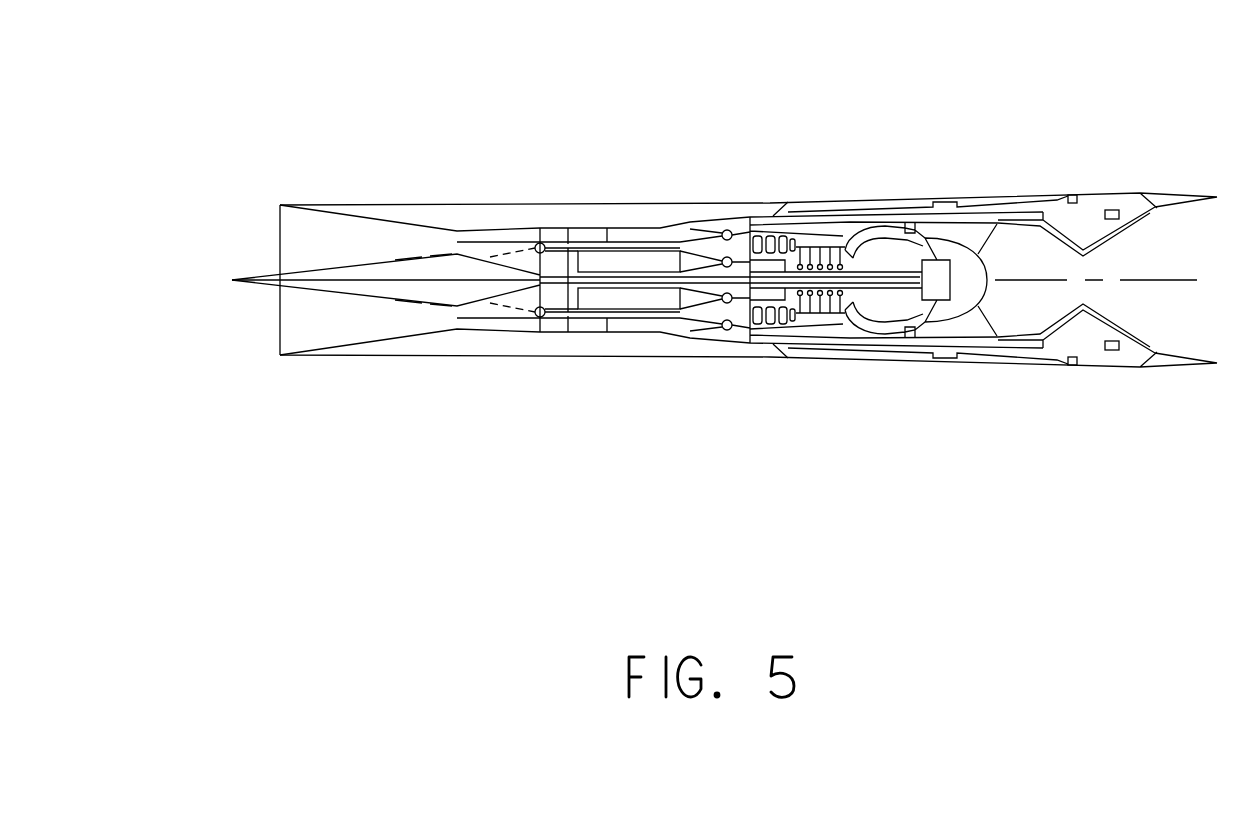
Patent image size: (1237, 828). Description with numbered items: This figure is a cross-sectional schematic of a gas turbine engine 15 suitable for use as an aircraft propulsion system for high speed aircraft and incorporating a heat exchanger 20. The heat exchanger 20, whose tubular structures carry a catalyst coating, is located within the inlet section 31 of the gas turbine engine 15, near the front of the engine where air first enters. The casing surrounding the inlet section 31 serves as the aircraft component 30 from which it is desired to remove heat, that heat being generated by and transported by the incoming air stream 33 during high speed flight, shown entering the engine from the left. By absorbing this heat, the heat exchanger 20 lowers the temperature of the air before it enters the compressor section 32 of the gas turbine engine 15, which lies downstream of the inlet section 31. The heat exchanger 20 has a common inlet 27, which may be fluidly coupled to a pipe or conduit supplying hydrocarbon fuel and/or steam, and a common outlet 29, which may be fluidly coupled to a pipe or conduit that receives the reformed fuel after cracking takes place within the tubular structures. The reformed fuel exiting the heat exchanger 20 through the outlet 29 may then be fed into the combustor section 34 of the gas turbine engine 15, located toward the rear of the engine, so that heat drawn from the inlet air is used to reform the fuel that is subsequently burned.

The gas turbine engine 15 is at (1018, 113).
The heat exchanger 20 is at (649, 303).
The inlet 27 is at (687, 200).
The outlet 29 is at (629, 203).
The aircraft component 30 is at (607, 242).
The inlet section 31 is at (653, 358).
The compressor section 32 is at (802, 362).
The incoming air stream 33 is at (245, 237).
The combustor section 34 is at (900, 372).